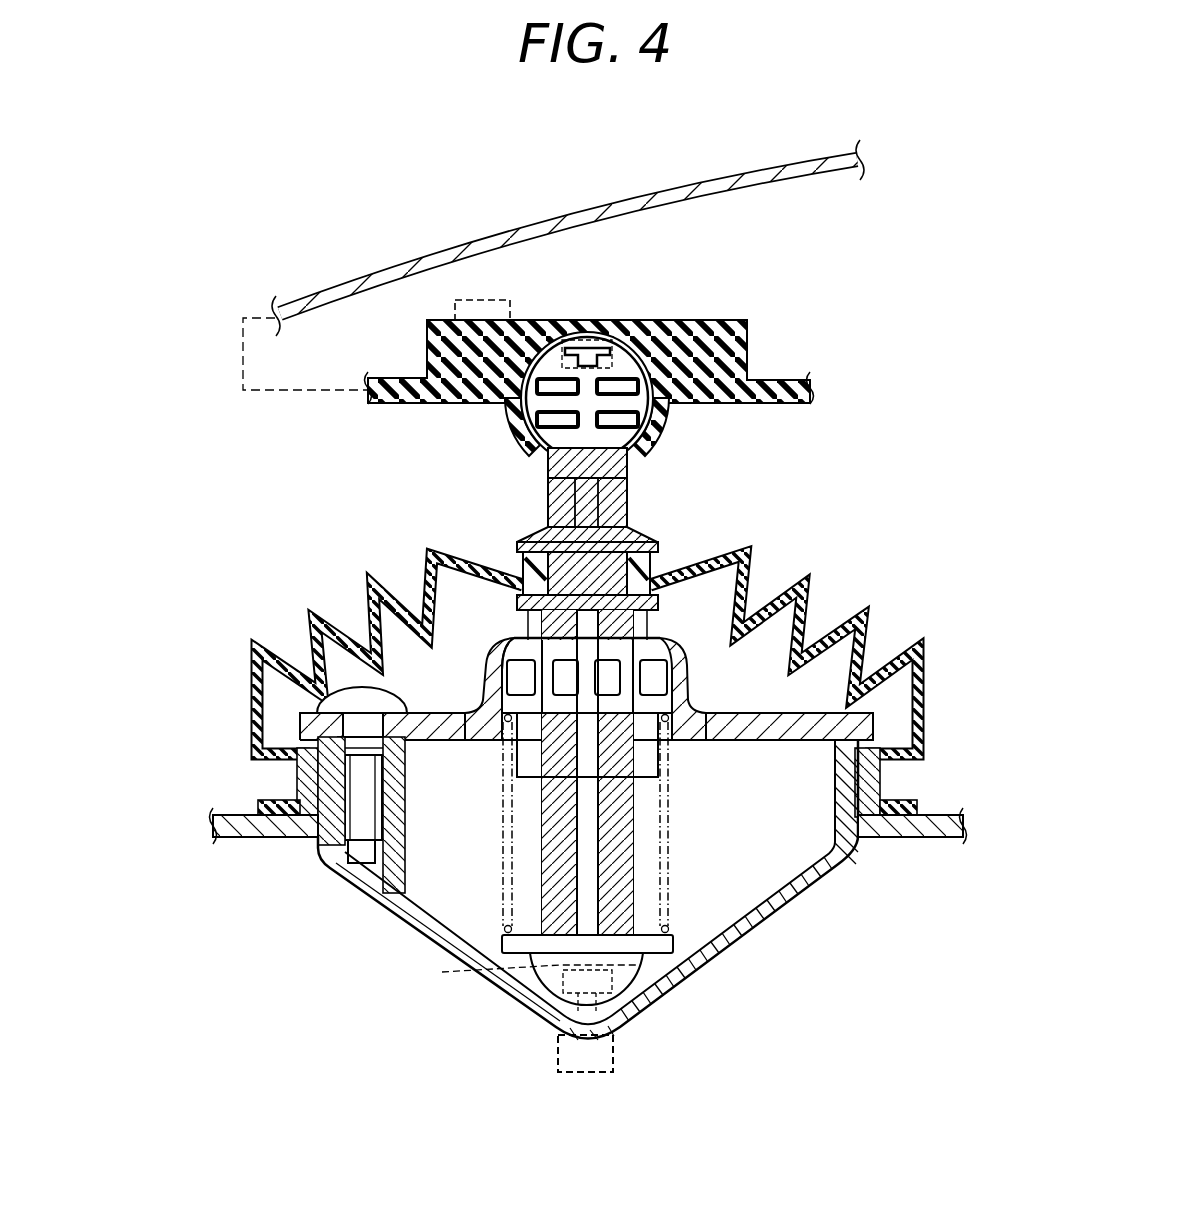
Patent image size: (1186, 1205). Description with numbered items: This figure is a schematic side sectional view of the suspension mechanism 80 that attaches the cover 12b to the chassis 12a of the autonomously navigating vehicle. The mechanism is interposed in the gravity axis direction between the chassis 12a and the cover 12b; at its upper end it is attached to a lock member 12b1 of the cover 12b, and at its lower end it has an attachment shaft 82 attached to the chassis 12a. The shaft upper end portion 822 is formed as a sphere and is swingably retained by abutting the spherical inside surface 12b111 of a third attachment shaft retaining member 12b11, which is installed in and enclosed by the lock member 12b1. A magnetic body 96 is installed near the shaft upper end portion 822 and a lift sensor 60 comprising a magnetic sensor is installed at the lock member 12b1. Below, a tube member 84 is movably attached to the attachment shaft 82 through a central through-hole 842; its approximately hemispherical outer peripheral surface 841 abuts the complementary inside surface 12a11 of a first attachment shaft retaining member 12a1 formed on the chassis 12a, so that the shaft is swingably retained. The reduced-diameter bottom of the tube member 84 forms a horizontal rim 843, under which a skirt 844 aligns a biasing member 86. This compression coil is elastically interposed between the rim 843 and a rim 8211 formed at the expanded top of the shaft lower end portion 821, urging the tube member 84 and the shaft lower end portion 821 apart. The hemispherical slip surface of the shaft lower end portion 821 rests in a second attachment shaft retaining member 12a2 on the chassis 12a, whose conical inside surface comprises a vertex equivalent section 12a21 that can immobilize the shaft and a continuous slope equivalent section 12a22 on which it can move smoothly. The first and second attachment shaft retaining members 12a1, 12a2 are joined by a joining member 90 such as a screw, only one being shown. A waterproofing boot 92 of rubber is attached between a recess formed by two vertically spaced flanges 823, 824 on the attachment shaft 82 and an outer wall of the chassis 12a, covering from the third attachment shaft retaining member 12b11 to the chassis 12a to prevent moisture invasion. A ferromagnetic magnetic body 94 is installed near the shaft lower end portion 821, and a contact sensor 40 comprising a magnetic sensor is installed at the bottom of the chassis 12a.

The cover 12b is at (521, 226).
The lock member 12b1 is at (776, 380).
The third attachment shaft retaining member 12b11 is at (673, 420).
The inside surface 12b111 is at (648, 440).
The lift sensor 60 is at (376, 345).
The magnetic body 96 is at (592, 338).
The suspension mechanism 80 is at (588, 683).
The attachment shaft 82 is at (543, 489).
The shaft upper end portion 822 is at (645, 455).
The flange 823 is at (516, 542).
The flange 824 is at (517, 600).
The waterproofing boot 92 is at (805, 595).
The tube member 84 is at (682, 718).
The outer peripheral surface 841 is at (681, 677).
The through-hole 842 is at (542, 718).
The rim 843 is at (500, 704).
The skirt 844 is at (645, 778).
The biasing member 86 is at (500, 866).
The shaft lower end portion 821 is at (530, 985).
The rim 8211 is at (673, 943).
The joining member 90 is at (368, 795).
The chassis 12a is at (910, 837).
The first attachment shaft retaining member 12a1 is at (778, 744).
The inside surface 12a11 is at (650, 692).
The second attachment shaft retaining member 12a2 is at (799, 871).
The vertex equivalent section 12a21 is at (600, 998).
The slope equivalent section 12a22 is at (660, 972).
The magnetic body 94 is at (524, 974).
The contact sensor 40 is at (585, 1021).